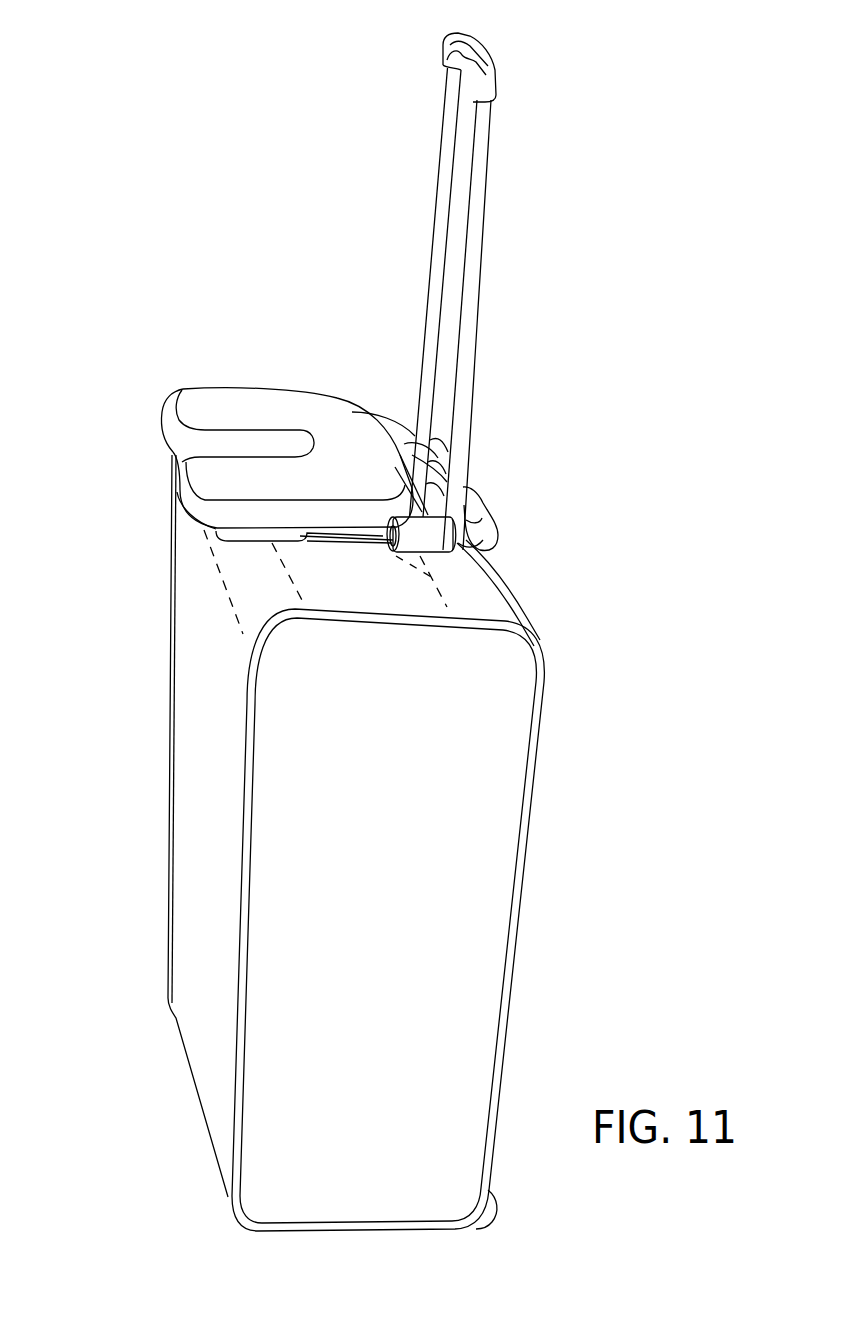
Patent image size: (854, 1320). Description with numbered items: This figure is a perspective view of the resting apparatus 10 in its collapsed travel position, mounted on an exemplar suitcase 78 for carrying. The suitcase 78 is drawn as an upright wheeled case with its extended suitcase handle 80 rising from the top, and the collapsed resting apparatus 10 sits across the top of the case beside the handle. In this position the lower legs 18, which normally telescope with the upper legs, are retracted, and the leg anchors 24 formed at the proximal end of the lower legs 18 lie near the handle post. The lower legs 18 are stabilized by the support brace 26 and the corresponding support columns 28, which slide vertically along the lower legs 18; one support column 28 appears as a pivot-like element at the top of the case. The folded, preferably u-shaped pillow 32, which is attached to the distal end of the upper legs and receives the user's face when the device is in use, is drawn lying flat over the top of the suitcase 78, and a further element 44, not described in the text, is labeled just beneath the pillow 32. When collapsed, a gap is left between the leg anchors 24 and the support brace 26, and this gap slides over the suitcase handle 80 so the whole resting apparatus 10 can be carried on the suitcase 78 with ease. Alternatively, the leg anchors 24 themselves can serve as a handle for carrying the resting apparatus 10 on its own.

The resting apparatus 10 is at (253, 364).
The lower legs 18 is at (362, 538).
The leg anchors 24 is at (481, 525).
The support brace 26 is at (425, 496).
The support columns 28 is at (400, 442).
The pillow 32 is at (165, 432).
The bracket 44 is at (250, 535).
The suitcase 78 is at (527, 873).
The suitcase handle 80 is at (473, 282).